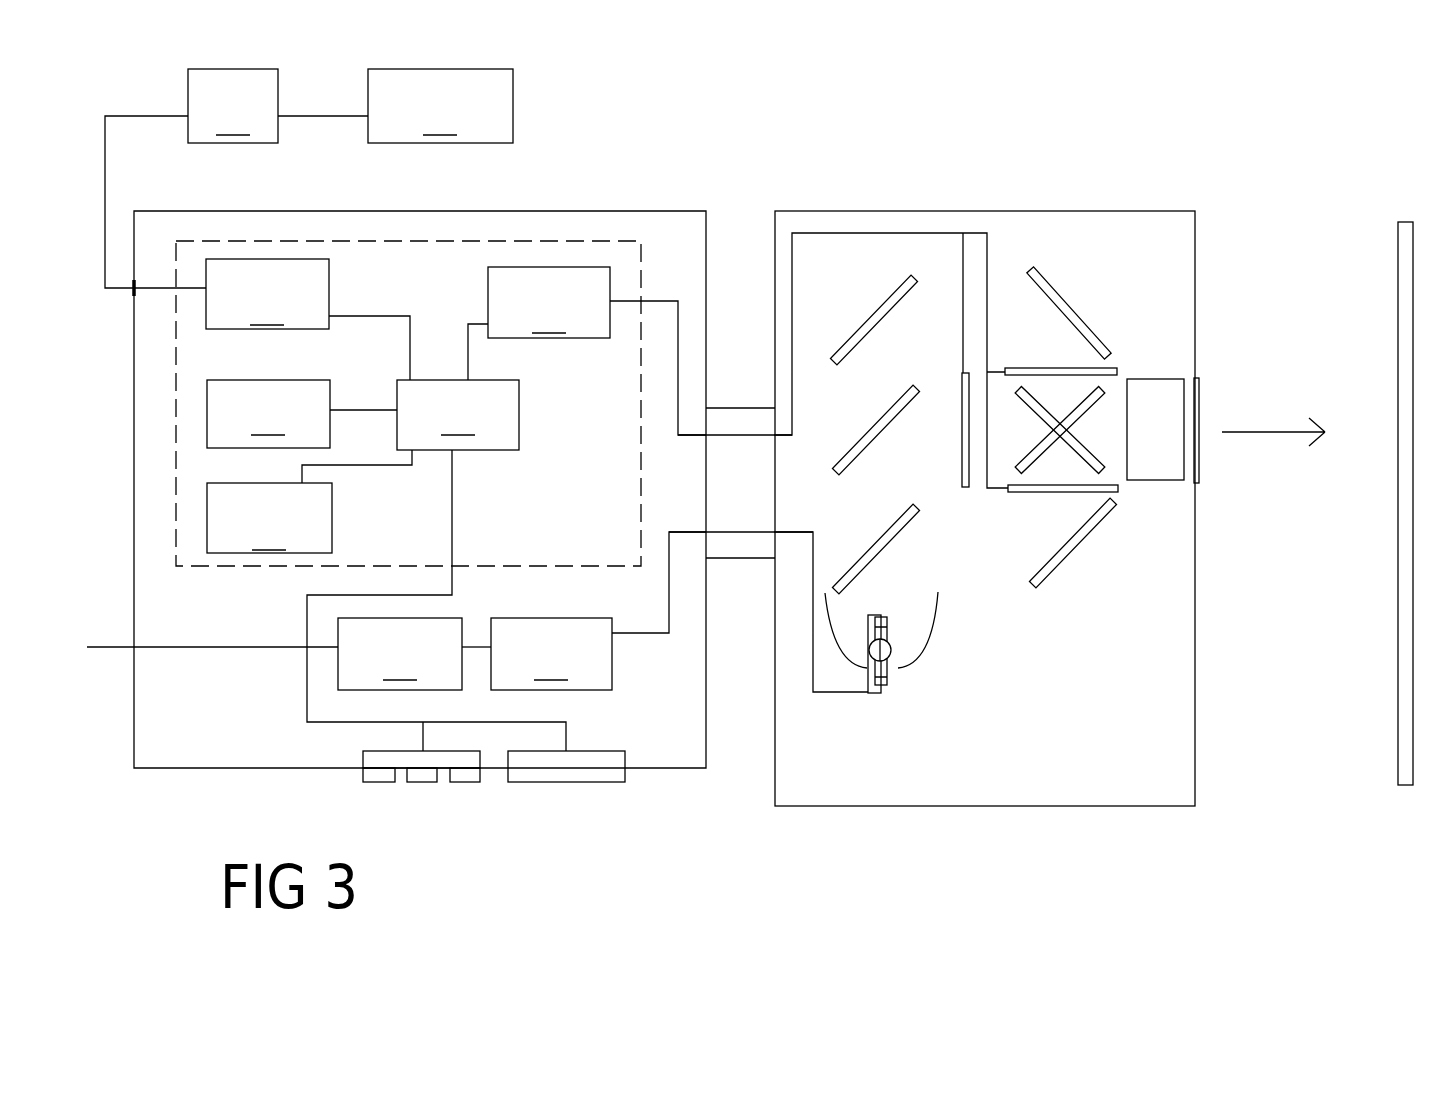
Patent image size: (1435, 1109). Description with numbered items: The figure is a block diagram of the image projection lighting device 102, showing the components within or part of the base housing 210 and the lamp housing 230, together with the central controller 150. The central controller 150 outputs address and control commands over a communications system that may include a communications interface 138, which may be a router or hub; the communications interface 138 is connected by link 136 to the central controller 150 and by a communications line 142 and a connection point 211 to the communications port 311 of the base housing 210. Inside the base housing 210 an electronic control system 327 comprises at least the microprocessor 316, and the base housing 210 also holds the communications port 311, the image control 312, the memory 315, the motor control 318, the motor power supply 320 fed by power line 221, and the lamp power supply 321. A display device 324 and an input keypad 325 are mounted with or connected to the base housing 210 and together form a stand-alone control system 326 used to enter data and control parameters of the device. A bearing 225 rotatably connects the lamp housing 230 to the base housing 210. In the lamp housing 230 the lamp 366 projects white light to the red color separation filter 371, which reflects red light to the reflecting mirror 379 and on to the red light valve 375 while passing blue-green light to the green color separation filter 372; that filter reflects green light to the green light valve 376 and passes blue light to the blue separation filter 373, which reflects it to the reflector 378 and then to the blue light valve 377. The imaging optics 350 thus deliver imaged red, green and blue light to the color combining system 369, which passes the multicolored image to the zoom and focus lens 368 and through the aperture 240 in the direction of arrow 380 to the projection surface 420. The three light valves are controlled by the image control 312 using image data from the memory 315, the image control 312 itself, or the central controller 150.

The image projection lighting device 102 is at (960, 140).
The communication link to central controller 136 is at (337, 110).
The communications interface 138 is at (233, 106).
The communications line 142 is at (150, 110).
The central controller 150 is at (440, 106).
The base housing 210 is at (572, 203).
The connection point 211 is at (123, 295).
The power line 221 is at (110, 652).
The bearing 225 is at (741, 388).
The lamp housing 230 is at (855, 207).
The aperture 240 is at (1204, 398).
The communications port 311 is at (308, 319).
The image control 312 is at (738, 360).
The memory 315 is at (302, 414).
The microprocessor 316 is at (434, 565).
The motor control 318 is at (269, 518).
The motor power supply 320 is at (414, 654).
The lamp power supply 321 is at (679, 612).
The display device 324 is at (613, 785).
The input keypad 325 is at (427, 785).
The stand-alone control system 326 is at (549, 813).
The electronic control system 327 is at (200, 575).
The imaging optics 350 is at (1143, 316).
The lamp 366 is at (933, 636).
The zoom and focus lens 368 is at (1153, 490).
The color combining system 369 is at (1045, 430).
The red color separation filter 371 is at (895, 521).
The green color separation filter 372 is at (883, 414).
The blue separation filter 373 is at (883, 295).
The red light valve 375 is at (1032, 496).
The green light valve 376 is at (965, 493).
The blue light valve 377 is at (1033, 367).
The reflector 378 is at (1082, 308).
The reflecting mirror 379 is at (1088, 549).
The arrow 380 is at (1273, 428).
The projection surface 420 is at (1390, 300).